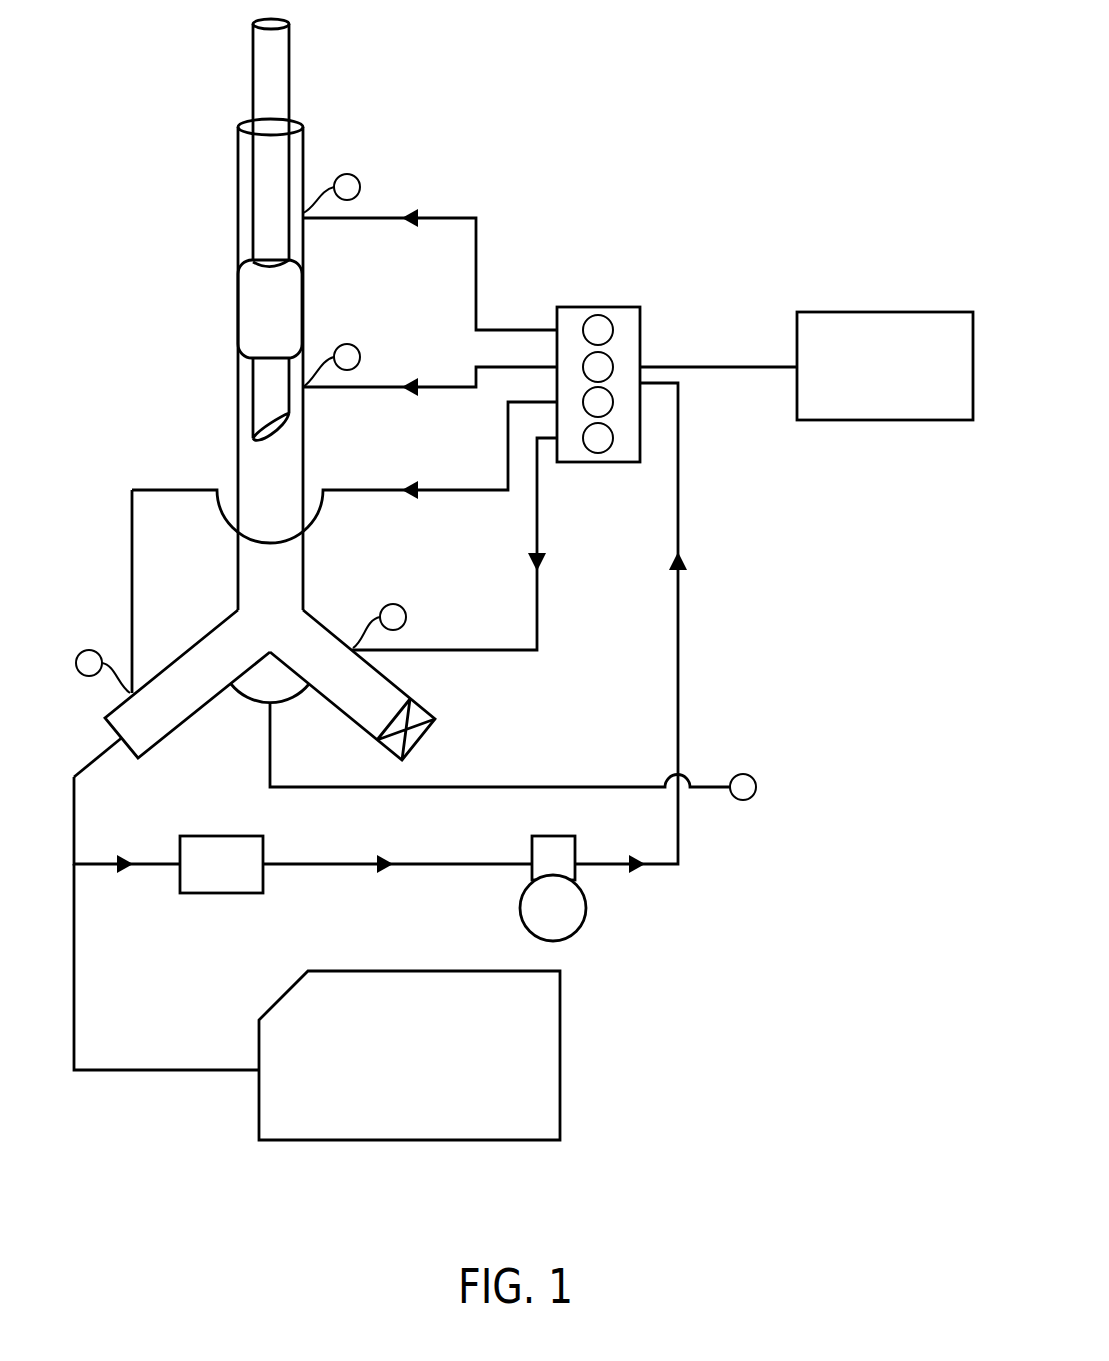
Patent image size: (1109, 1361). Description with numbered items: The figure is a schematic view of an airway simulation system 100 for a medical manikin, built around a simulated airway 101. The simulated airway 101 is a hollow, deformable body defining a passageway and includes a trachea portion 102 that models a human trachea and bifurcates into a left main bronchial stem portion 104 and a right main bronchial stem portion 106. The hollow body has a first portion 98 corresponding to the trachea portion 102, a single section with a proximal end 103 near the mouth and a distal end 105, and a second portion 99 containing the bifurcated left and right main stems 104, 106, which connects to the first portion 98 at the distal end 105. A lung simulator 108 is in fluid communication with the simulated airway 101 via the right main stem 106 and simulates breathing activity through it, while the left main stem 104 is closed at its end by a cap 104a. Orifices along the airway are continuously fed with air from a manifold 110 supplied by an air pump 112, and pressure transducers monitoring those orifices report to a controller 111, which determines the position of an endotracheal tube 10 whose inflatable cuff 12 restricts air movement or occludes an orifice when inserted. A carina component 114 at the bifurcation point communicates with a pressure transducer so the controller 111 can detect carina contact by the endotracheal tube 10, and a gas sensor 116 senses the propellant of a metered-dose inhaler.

The endotracheal tube 10 is at (253, 98).
The inflatable cuff 12 is at (248, 310).
The first portion 98 is at (168, 375).
The second portion 99 is at (422, 678).
The airway simulation system 100 is at (587, 112).
The simulated airway 101 is at (237, 177).
The trachea portion 102 is at (250, 450).
The proximal end 103 is at (237, 127).
The left main bronchial stem portion 104 is at (327, 628).
The cap 104a is at (422, 737).
The distal end 105 is at (305, 607).
The right main bronchial stem portion 106 is at (193, 645).
The lung simulator 108 is at (400, 1140).
The manifold 110 is at (640, 348).
The controller 111 is at (888, 312).
The air pump 112 is at (586, 915).
The carina component 114 is at (305, 687).
The gas sensor 116 is at (263, 878).